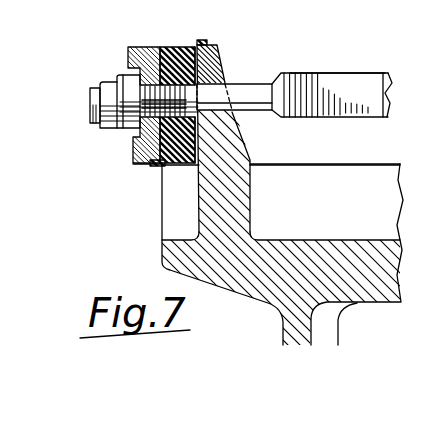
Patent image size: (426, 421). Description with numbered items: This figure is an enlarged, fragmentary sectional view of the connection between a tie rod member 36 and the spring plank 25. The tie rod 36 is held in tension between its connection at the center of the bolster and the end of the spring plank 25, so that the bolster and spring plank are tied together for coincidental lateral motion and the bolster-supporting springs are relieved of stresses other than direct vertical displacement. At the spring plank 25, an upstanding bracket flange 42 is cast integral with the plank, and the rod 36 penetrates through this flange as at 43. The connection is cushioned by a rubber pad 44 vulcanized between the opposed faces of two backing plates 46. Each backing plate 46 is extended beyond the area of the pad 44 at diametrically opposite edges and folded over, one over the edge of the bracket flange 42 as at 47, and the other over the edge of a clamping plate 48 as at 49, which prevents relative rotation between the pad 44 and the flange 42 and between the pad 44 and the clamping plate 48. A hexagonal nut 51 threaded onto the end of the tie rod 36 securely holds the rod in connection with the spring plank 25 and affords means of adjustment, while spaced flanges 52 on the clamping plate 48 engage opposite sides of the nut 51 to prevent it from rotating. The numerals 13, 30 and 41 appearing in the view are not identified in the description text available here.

The housing 13 is at (328, 82).
The spring plank 25 is at (365, 240).
The tube 30 is at (337, 36).
The tie rod member 36 is at (397, 78).
The sleeve 41 is at (350, 78).
The upstanding bracket flange 42 is at (300, 158).
The rod penetration 43 is at (263, 59).
The rubber pad 44 is at (172, 47).
The backing plates 46 is at (161, 47).
The folded edge over bracket flange 47 is at (242, 24).
The clamping plate 48 is at (135, 164).
The folded edge over clamping plate 49 is at (158, 166).
The nut 51 is at (103, 82).
The spaced flanges 52 is at (128, 52).